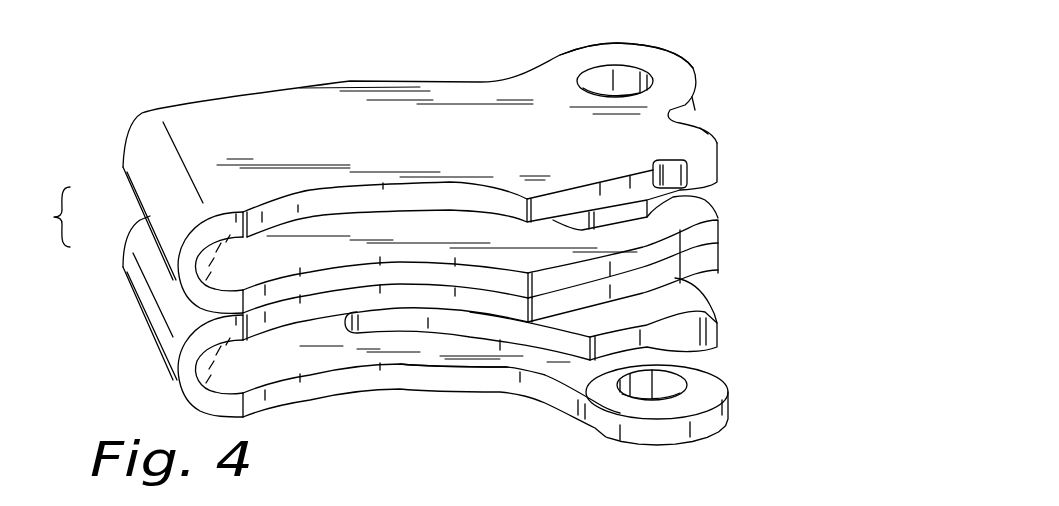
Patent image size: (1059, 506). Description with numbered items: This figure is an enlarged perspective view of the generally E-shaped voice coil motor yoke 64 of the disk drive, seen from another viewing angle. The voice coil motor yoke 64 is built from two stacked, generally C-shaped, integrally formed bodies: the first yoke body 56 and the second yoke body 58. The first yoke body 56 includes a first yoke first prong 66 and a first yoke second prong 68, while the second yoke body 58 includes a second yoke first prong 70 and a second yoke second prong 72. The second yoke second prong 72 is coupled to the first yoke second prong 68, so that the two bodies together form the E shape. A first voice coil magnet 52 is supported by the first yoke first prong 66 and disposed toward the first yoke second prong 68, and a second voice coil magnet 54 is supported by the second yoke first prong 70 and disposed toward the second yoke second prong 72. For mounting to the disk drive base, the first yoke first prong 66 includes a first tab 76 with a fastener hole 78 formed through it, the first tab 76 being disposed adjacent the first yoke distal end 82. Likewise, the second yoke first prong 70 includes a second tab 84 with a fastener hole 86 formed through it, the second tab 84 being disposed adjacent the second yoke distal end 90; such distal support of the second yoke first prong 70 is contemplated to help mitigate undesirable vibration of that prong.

The first voice coil magnet 52 is at (690, 313).
The second voice coil magnet 54 is at (682, 192).
The first yoke body 56 is at (140, 250).
The second yoke body 58 is at (127, 200).
The voice coil motor yoke 64 is at (46, 217).
The first yoke first prong 66 is at (433, 345).
The first yoke second prong 68 is at (718, 255).
The second yoke first prong 70 is at (403, 85).
The second yoke second prong 72 is at (718, 228).
The first tab 76 is at (710, 388).
The fastener hole 78 is at (684, 378).
The first yoke distal end 82 is at (505, 364).
The second tab 84 is at (603, 50).
The fastener hole 86 is at (636, 60).
The second yoke distal end 90 is at (690, 140).